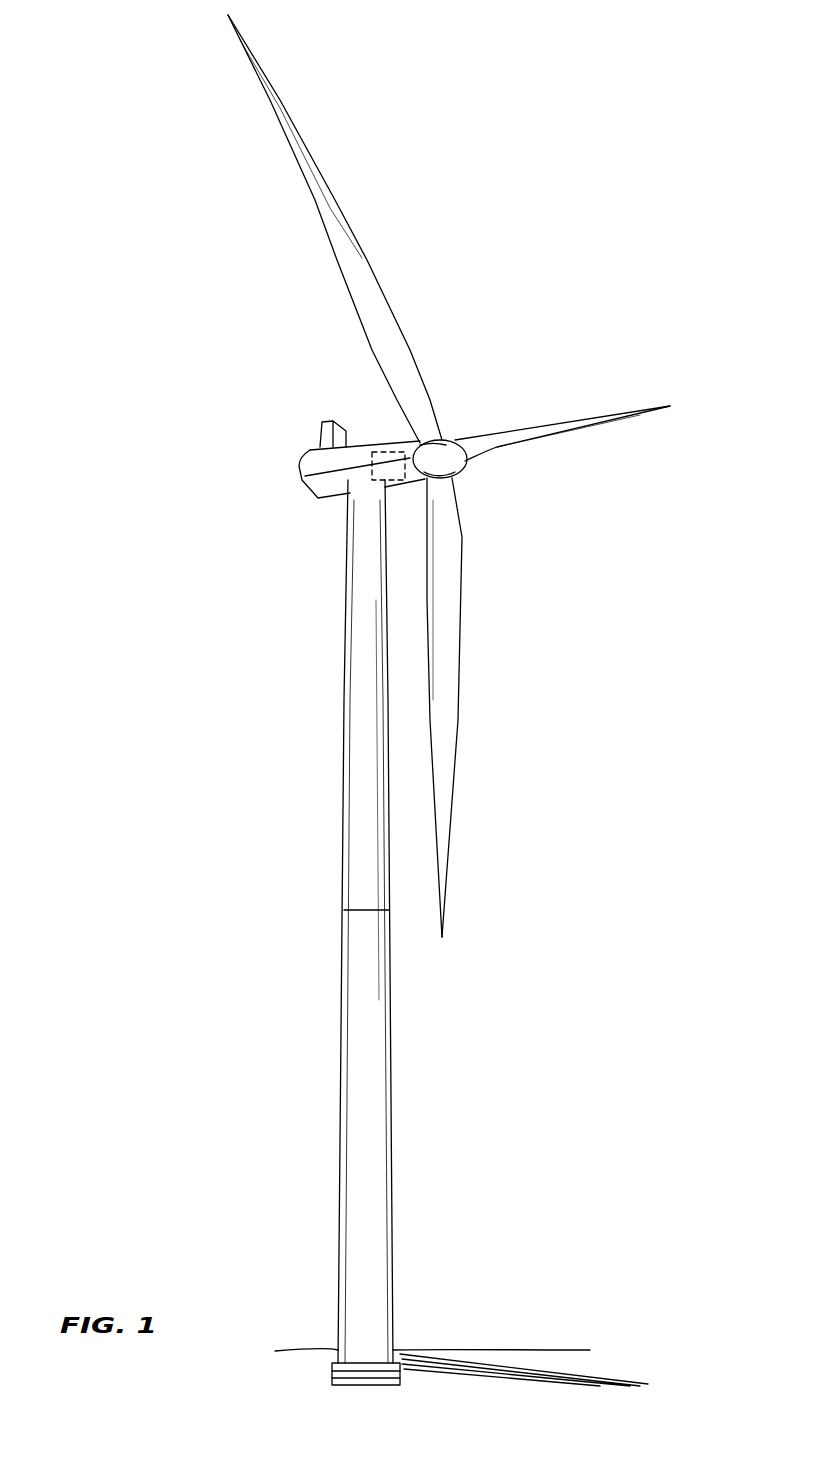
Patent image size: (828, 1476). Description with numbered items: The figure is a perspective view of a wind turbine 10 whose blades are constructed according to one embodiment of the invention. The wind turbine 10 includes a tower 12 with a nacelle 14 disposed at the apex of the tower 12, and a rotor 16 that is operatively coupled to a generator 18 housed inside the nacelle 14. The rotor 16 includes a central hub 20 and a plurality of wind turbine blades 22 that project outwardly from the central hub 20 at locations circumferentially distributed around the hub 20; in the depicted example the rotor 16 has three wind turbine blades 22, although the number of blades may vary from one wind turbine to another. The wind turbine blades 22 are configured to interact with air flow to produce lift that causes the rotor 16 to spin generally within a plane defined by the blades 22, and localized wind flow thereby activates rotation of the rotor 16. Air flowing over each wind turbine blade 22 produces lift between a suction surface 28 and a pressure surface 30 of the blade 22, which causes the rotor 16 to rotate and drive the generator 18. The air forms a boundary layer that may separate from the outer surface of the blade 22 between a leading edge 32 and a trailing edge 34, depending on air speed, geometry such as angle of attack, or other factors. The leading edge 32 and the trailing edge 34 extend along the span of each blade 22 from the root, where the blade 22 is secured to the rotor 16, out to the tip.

The wind turbine 10 is at (560, 300).
The tower 12 is at (344, 706).
The nacelle 14 is at (303, 454).
The rotor 16 is at (467, 469).
The generator 18 is at (384, 447).
The central hub 20 is at (446, 442).
The wind turbine blade 22 is at (318, 222).
The suction surface 28 is at (358, 288).
The pressure surface 30 is at (640, 412).
The leading edge 32 is at (373, 345).
The trailing edge 34 is at (404, 330).